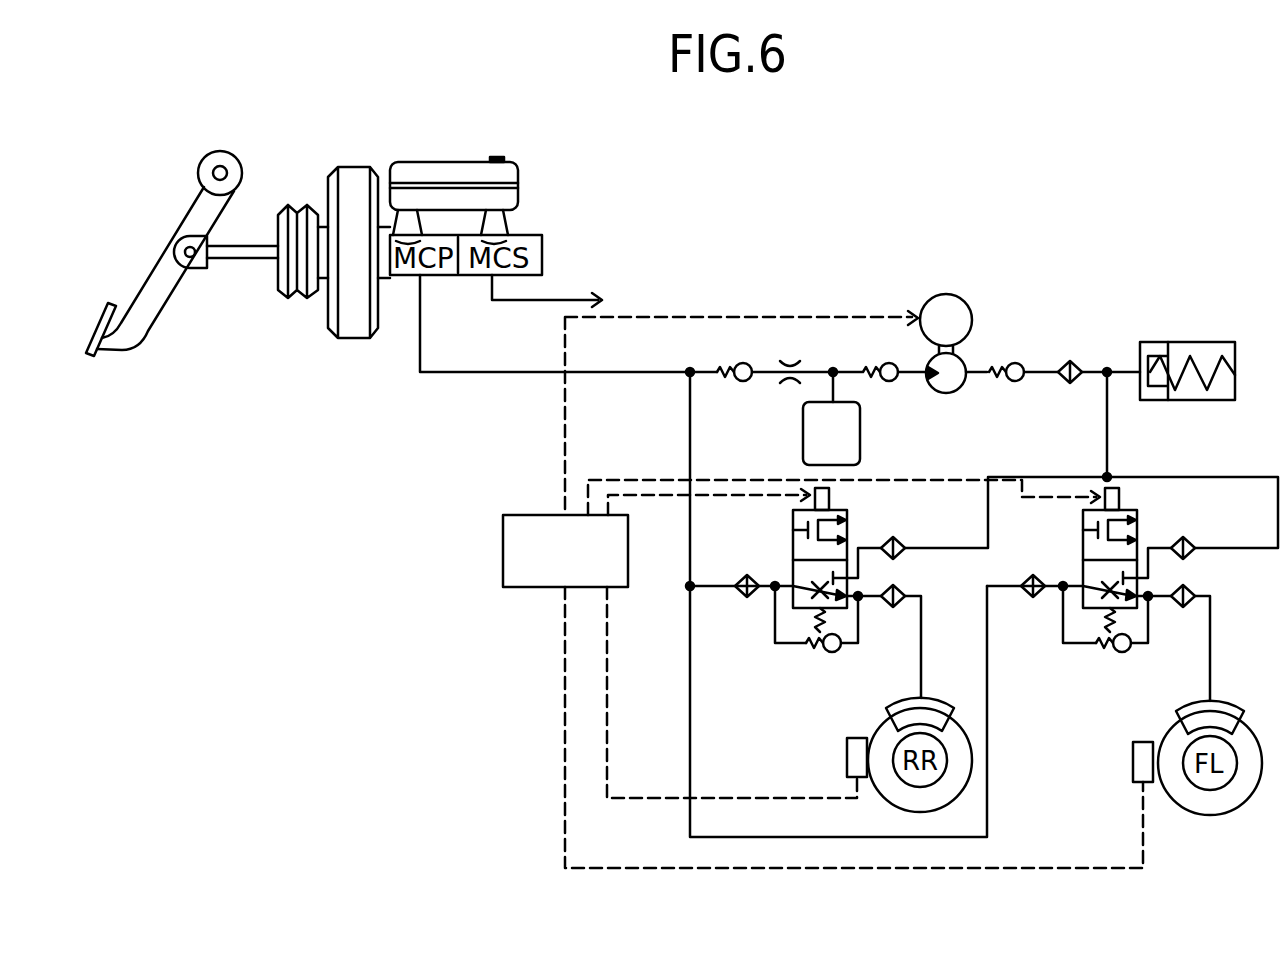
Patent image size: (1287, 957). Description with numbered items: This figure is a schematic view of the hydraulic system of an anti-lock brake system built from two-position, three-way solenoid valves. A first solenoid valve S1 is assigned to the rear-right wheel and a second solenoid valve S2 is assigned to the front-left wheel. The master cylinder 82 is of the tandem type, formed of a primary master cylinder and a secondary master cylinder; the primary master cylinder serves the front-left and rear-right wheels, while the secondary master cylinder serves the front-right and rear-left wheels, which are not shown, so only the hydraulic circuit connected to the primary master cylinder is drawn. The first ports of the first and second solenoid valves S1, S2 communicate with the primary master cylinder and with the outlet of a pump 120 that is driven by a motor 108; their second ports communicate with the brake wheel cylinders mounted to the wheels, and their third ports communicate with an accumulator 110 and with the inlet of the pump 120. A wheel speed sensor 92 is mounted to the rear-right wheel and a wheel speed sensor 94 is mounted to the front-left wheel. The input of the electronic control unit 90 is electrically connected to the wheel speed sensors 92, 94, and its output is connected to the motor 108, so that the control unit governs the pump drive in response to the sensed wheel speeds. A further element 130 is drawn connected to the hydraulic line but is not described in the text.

The master cylinder 82 is at (345, 332).
The ECU 90 is at (510, 527).
The wheel speed sensor 92 is at (858, 745).
The wheel speed sensor 94 is at (1140, 746).
The motor 108 is at (946, 294).
The accumulator 110 is at (1188, 342).
The pump 120 is at (960, 361).
The reservoir 130 is at (803, 421).
The first solenoid valve S1 is at (864, 506).
The second solenoid valve S2 is at (1154, 508).